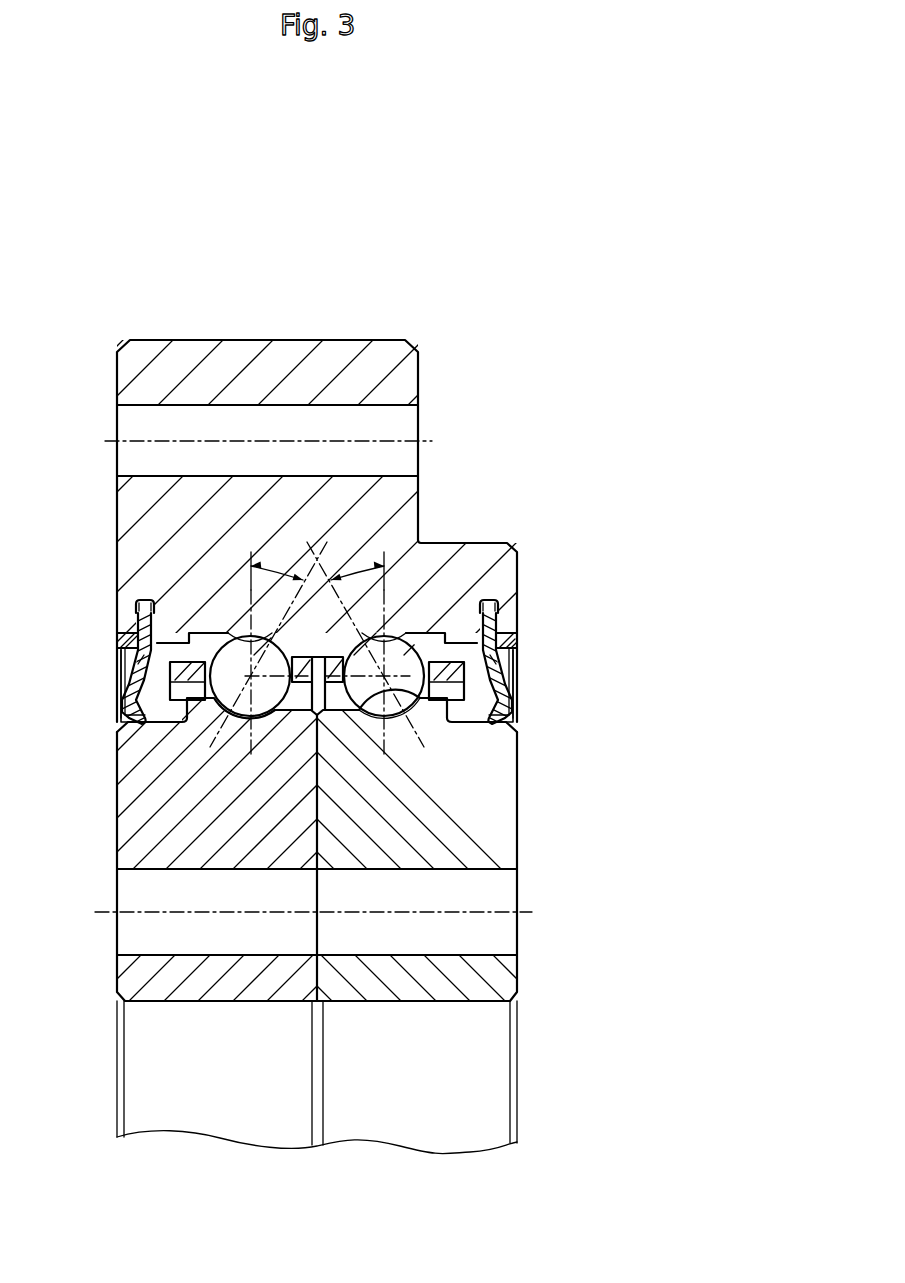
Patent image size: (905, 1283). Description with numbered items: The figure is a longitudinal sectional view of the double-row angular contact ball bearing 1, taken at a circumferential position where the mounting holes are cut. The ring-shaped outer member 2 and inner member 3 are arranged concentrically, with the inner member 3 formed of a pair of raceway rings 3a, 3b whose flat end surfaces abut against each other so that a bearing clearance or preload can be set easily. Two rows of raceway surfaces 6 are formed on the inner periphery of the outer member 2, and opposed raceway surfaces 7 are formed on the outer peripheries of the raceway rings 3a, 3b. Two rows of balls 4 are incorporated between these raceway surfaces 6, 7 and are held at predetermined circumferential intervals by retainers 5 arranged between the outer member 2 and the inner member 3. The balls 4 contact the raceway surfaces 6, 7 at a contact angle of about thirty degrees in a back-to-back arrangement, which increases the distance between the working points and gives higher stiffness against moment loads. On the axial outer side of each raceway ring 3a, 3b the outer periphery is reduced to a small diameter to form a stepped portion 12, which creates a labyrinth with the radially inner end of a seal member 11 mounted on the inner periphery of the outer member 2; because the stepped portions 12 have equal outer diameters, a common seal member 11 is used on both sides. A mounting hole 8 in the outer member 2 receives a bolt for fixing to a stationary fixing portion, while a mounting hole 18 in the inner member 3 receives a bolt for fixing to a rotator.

The double-row angular contact ball bearing 1 is at (368, 302).
The outer member 2 is at (296, 338).
The inner member 3 is at (213, 1017).
The raceway ring 3a is at (251, 1001).
The raceway ring 3b is at (417, 1001).
The balls 4 is at (212, 647).
The retainers 5 is at (183, 658).
The raceway surfaces 6 is at (240, 632).
The raceway surfaces 7 is at (243, 717).
The mounting hole 8 is at (380, 405).
The seal member 11 is at (140, 663).
The stepped portion 12 is at (127, 719).
The mounting hole 18 is at (443, 955).